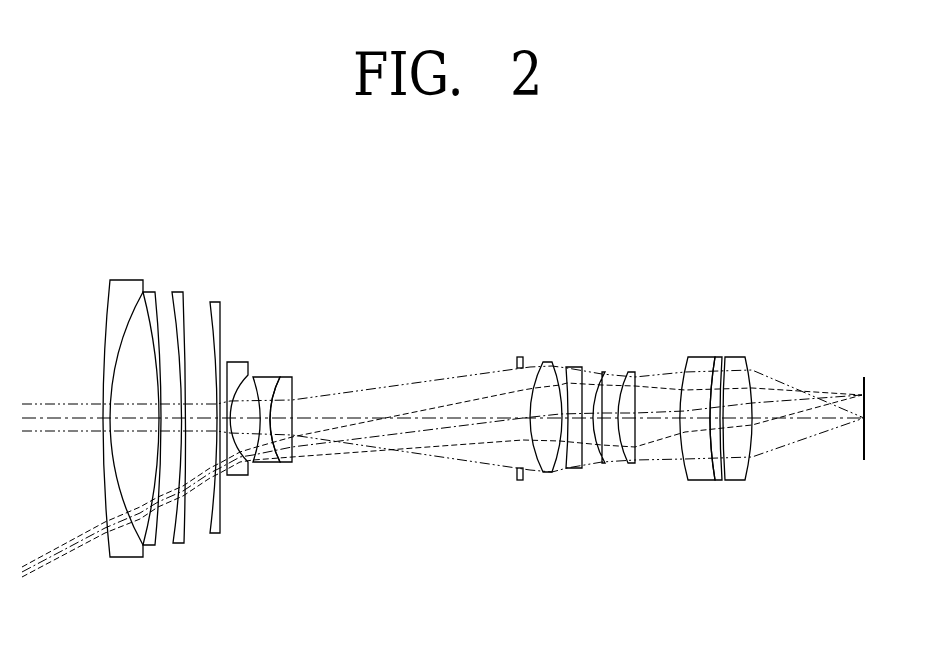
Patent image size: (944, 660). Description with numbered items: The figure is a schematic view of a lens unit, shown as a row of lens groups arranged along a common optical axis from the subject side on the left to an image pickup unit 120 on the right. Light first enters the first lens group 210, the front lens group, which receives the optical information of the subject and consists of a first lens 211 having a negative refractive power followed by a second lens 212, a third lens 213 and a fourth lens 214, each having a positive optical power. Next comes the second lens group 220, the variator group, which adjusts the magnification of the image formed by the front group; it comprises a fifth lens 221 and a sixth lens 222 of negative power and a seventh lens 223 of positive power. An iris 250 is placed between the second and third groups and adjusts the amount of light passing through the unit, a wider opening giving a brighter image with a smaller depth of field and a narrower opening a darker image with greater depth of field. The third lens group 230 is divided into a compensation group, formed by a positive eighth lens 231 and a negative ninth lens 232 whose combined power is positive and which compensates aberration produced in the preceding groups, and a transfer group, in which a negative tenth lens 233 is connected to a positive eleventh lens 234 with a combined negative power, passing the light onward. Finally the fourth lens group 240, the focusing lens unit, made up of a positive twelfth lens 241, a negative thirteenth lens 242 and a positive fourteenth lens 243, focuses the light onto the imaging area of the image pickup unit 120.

The image pickup unit 120 is at (865, 397).
The first lens group 210 is at (223, 277).
The first lens 211 is at (123, 557).
The second lens 212 is at (148, 547).
The third lens 213 is at (178, 545).
The fourth lens 214 is at (213, 533).
The second lens group 220 is at (293, 483).
The fifth lens 221 is at (237, 362).
The sixth lens 222 is at (268, 377).
The seventh lens 223 is at (290, 377).
The third lens group 230 is at (633, 358).
The eighth lens 231 is at (547, 472).
The ninth lens 232 is at (575, 468).
The tenth lens 233 is at (613, 463).
The eleventh lens 234 is at (632, 463).
The fourth lens group 240 is at (752, 487).
The twelfth lens 241 is at (693, 357).
The thirteenth lens 242 is at (717, 357).
The fourteenth lens 243 is at (737, 357).
The iris 250 is at (517, 358).